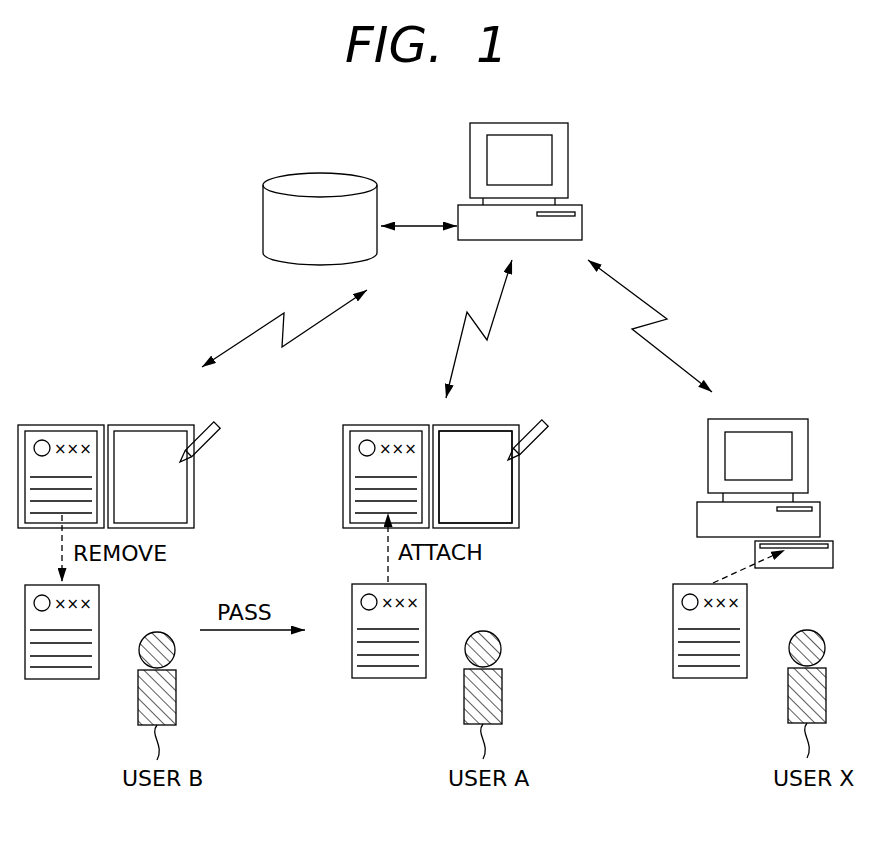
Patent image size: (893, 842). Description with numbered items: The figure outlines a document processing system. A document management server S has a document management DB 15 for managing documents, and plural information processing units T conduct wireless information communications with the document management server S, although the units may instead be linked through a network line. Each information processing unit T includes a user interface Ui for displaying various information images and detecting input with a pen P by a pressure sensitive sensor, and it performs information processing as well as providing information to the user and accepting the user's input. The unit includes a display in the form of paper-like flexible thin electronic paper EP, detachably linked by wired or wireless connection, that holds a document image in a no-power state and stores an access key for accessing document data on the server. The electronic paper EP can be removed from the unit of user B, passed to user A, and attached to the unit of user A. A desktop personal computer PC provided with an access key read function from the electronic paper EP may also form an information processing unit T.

The document management DB 15 is at (325, 173).
The document management server S is at (582, 222).
The information processing unit T is at (496, 424).
The pen P is at (543, 423).
The user interface Ui is at (522, 489).
The electronic paper EP is at (426, 606).
The desktop personal computer PC is at (697, 515).